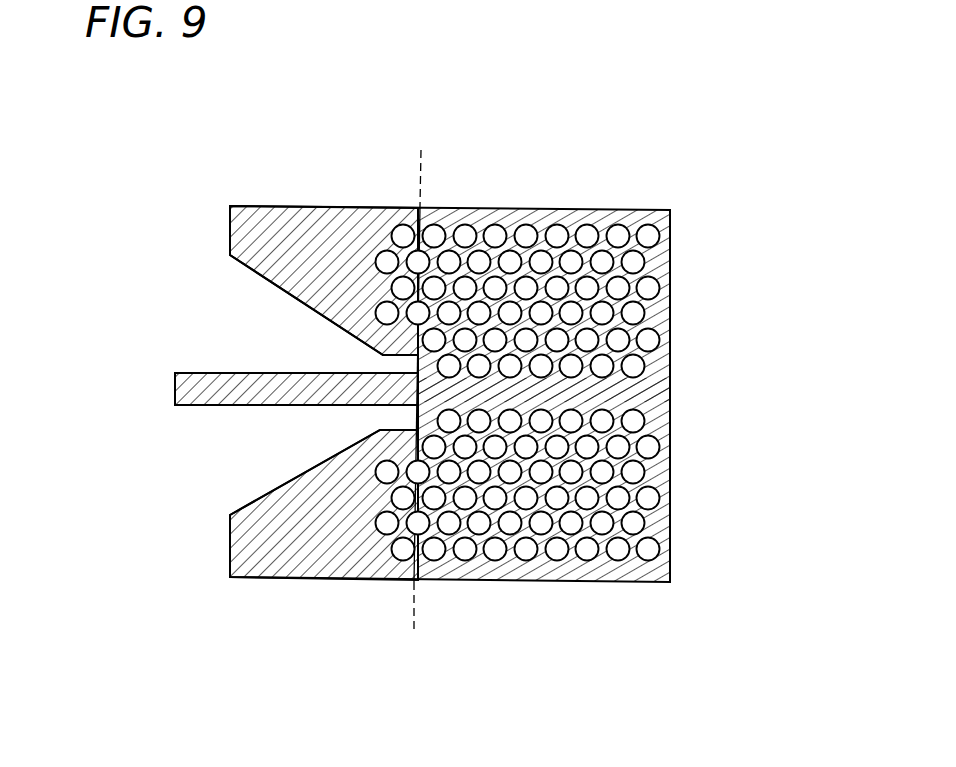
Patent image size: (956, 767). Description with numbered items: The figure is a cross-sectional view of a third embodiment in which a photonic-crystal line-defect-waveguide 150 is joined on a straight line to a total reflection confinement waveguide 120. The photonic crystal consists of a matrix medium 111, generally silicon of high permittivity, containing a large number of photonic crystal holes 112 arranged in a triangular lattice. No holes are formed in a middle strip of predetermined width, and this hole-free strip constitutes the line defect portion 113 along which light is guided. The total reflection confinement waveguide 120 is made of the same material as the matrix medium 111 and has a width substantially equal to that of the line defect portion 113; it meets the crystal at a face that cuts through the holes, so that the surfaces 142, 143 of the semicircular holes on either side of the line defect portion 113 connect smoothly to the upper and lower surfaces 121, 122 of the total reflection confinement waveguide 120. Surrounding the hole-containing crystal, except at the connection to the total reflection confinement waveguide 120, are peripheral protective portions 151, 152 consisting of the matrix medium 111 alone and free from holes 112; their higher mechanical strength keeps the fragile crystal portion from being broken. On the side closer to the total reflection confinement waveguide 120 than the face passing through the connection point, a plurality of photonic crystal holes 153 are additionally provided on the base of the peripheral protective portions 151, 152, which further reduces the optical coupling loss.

The matrix medium 111 is at (520, 214).
The photonic crystal hole 112 is at (652, 292).
The line defect portion 113 is at (607, 403).
The total reflection confinement waveguide 120 is at (224, 400).
The surface 121 is at (197, 372).
The surface 122 is at (185, 406).
The surface 142 is at (416, 367).
The surface 143 is at (416, 424).
The photonic-crystal line-defect-waveguide 150 is at (512, 588).
The peripheral protective portion 151 is at (268, 222).
The peripheral protective portion 152 is at (262, 548).
The photonic crystal hole 153 is at (398, 553).